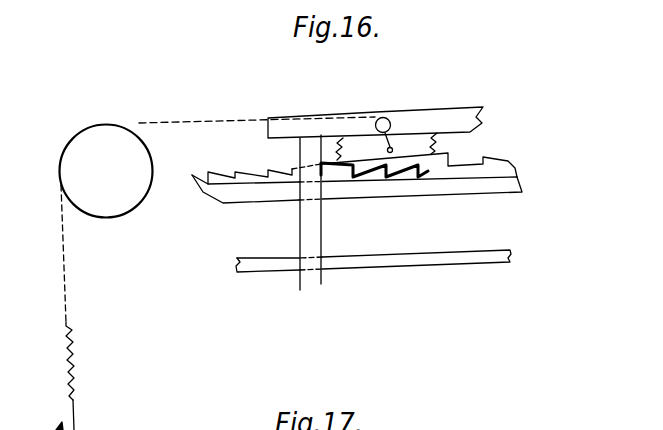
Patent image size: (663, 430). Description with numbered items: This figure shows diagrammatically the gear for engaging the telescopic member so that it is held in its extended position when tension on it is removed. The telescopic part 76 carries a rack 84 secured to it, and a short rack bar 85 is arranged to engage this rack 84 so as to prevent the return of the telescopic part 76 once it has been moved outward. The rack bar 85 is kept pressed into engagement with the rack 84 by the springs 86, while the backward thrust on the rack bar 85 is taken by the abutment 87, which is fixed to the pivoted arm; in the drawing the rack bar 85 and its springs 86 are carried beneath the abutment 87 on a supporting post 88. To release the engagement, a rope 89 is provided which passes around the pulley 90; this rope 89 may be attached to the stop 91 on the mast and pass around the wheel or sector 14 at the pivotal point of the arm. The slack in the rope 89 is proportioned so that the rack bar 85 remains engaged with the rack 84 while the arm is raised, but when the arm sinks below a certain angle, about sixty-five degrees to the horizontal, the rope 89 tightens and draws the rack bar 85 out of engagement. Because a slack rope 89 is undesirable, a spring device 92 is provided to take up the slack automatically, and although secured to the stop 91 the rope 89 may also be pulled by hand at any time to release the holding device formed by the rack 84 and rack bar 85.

The wheel or sector 14 is at (140, 127).
The telescopic part 76 is at (517, 169).
The rack 84 is at (497, 157).
The rack bar 85 is at (372, 171).
The springs 86 is at (343, 138).
The abutment 87 is at (323, 136).
The post 88 is at (298, 157).
The rope 89 is at (153, 122).
The pulley 90 is at (388, 117).
The stop 91 is at (89, 415).
The spring device 92 is at (77, 352).